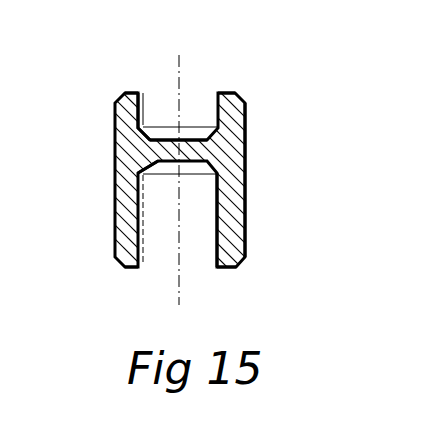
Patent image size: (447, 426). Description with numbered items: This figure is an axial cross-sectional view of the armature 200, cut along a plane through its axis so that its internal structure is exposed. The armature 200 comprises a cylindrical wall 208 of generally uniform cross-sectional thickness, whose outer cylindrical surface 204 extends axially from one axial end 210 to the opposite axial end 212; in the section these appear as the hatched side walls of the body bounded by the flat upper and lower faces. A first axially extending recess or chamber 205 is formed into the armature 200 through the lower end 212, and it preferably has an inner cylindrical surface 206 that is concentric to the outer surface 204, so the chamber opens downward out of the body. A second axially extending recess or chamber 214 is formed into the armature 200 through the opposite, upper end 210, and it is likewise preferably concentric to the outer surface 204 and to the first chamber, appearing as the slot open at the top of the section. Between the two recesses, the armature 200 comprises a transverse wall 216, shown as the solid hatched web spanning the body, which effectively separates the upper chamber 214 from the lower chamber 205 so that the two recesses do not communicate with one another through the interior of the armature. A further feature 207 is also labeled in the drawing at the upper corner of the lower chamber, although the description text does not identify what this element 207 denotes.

The armature 200 is at (108, 174).
The outer cylindrical surface 204 is at (244, 182).
The first axially extending recess or chamber 205 is at (193, 254).
The inner cylindrical surface 206 is at (154, 268).
The shoulder 207 is at (150, 172).
The cylindrical wall 208 is at (235, 227).
The axial end 210 is at (198, 90).
The axial end 212 is at (190, 268).
The second axially extending recess or chamber 214 is at (145, 100).
The transverse wall 216 is at (172, 145).